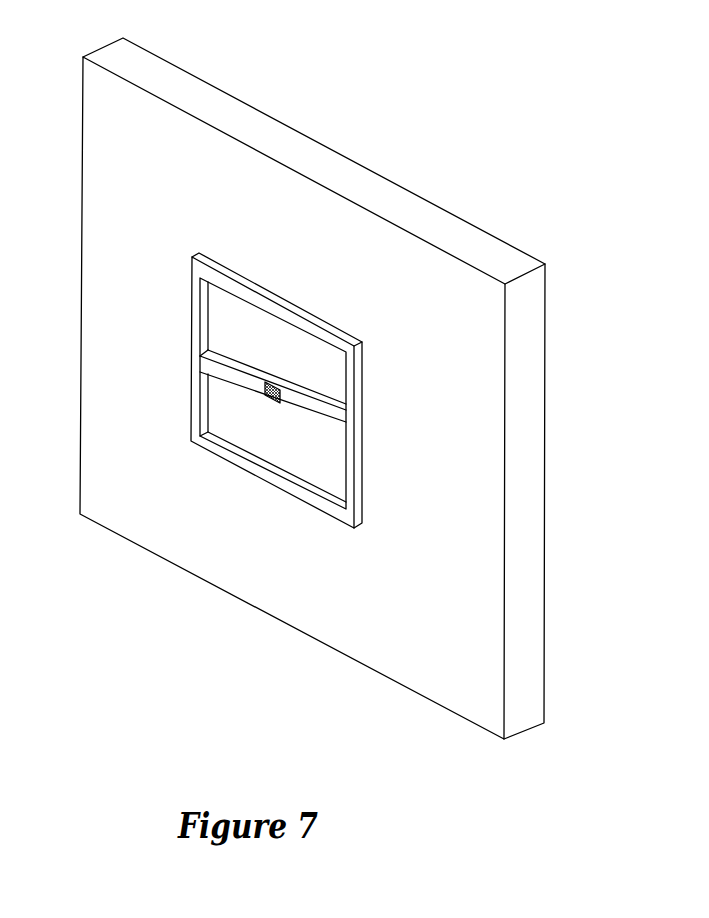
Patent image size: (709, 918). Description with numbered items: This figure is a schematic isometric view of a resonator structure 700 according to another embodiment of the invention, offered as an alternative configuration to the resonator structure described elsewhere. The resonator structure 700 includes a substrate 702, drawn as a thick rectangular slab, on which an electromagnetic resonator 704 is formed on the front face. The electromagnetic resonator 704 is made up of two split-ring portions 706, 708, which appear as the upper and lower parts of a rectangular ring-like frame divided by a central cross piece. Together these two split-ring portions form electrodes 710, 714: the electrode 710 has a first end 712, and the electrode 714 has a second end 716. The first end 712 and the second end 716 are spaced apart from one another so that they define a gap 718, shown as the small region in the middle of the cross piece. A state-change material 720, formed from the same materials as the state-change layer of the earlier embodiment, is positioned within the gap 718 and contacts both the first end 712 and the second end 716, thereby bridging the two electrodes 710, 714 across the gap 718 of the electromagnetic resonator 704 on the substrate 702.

The resonator structure 700 is at (489, 87).
The substrate 702 is at (532, 319).
The electromagnetic resonator 704 is at (177, 440).
The split-ring portion 706 is at (287, 313).
The split-ring portion 708 is at (263, 477).
The electrode 710 is at (228, 368).
The first end 712 is at (267, 383).
The electrode 714 is at (302, 407).
The second end 716 is at (287, 384).
The gap 718 is at (281, 406).
The state-change material 720 is at (262, 397).